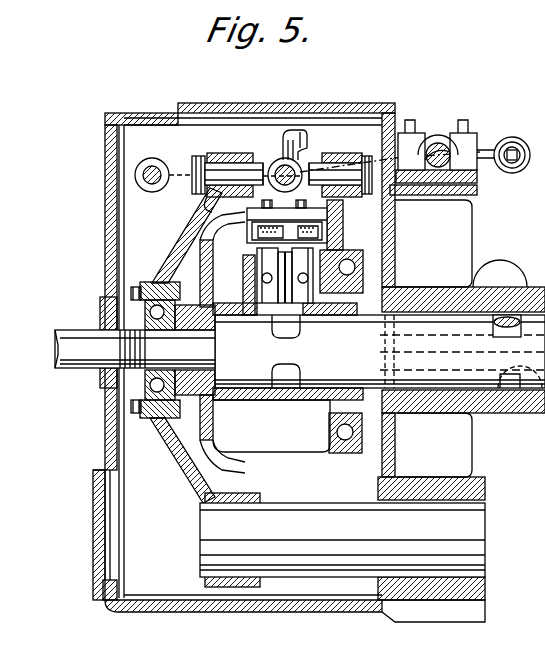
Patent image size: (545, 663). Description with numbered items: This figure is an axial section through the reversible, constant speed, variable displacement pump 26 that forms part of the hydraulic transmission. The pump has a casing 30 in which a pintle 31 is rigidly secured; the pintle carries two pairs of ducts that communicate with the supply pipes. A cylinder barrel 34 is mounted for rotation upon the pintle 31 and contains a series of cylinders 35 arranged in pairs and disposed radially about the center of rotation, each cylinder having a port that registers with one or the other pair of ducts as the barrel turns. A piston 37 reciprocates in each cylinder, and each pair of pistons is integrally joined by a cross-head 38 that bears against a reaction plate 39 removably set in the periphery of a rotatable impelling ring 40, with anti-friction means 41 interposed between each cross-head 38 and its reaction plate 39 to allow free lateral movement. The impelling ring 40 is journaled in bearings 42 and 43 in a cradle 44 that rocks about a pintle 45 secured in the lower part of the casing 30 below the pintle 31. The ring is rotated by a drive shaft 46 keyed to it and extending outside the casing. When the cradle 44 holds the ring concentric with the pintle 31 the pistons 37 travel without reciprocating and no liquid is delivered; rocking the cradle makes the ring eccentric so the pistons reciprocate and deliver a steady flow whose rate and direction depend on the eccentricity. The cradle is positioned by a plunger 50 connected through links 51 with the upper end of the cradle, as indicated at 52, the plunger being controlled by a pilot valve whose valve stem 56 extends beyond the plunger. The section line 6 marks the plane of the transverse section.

The section line 6- 6 is at (284, 97).
The pump 26 is at (132, 448).
The casing 30 is at (105, 215).
The pintle 31 is at (478, 411).
The cylinder barrel 34 is at (225, 440).
The cylinders 35 is at (320, 305).
The piston 37 is at (360, 258).
The cross-head 38 is at (200, 246).
The reaction plate 39 is at (208, 212).
The impelling ring 40 is at (397, 218).
The anti-friction means 41 is at (247, 221).
The bearing 42 is at (134, 393).
The bearing 43 is at (320, 296).
The cradle 44 is at (145, 262).
The pintle 45 is at (218, 534).
The drive shaft 46 is at (62, 356).
The plunger 50 is at (320, 165).
The links 51 is at (194, 168).
The connection of links to cradle 52 is at (232, 172).
The valve stem 56 is at (280, 165).